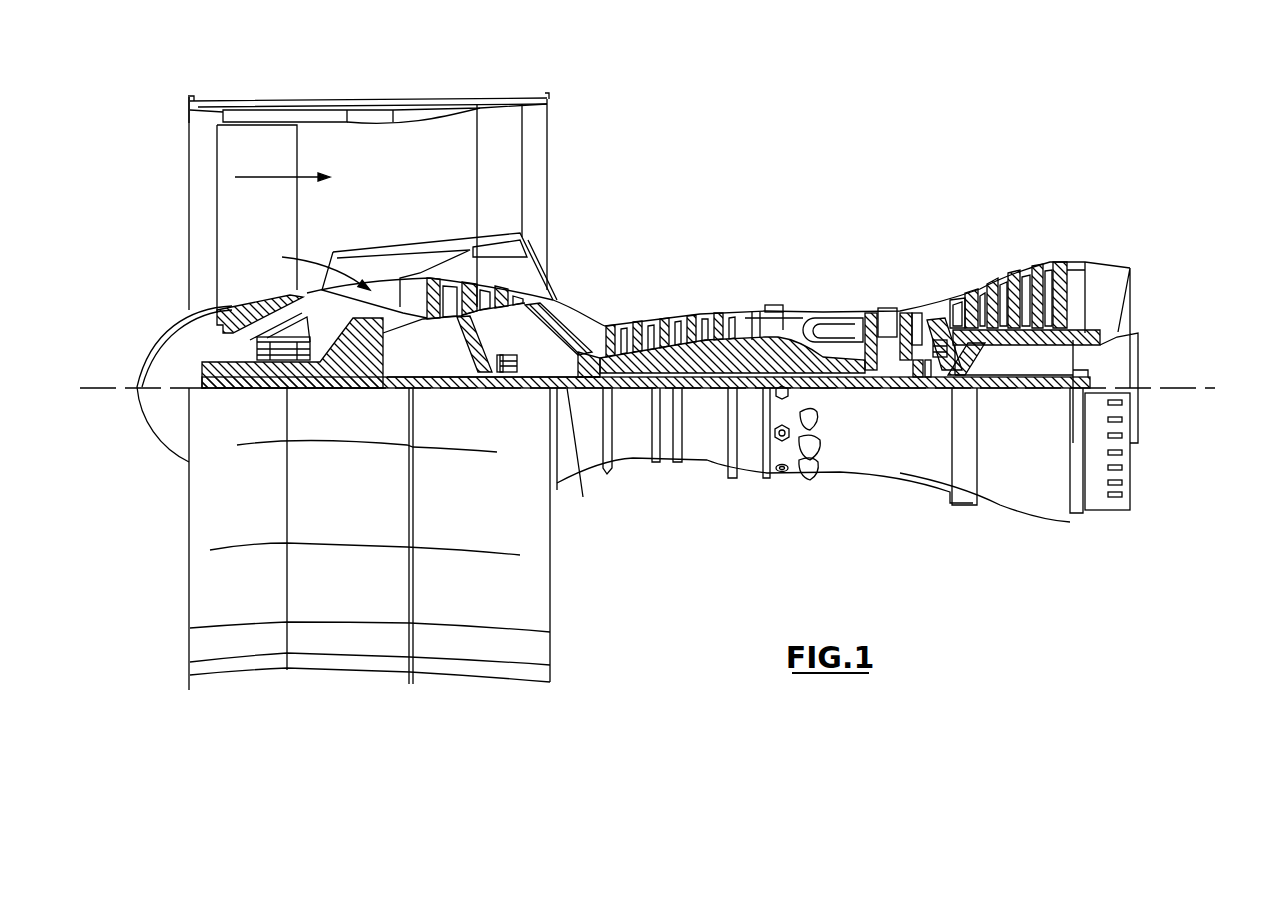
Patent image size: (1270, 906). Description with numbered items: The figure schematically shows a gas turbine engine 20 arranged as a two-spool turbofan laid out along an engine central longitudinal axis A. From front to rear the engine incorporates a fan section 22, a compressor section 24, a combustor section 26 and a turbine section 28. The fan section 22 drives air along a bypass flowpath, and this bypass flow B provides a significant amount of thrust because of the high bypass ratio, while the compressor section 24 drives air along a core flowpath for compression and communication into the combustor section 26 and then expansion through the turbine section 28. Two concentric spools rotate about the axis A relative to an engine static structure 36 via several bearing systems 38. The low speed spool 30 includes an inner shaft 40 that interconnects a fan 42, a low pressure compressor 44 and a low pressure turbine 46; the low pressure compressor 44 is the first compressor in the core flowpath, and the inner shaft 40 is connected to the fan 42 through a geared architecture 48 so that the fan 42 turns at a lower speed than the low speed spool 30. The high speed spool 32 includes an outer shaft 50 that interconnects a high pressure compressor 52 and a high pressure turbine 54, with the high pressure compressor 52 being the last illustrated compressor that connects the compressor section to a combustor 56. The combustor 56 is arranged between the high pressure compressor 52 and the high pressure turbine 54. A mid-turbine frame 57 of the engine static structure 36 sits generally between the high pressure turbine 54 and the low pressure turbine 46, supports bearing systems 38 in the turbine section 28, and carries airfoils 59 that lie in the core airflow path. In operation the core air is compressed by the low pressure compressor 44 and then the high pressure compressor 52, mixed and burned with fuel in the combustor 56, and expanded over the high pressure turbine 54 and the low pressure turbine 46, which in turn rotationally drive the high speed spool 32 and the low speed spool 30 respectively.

The gas turbine engine 20 is at (832, 149).
The fan section 22 is at (293, 90).
The compressor section 24 is at (605, 290).
The combustor section 26 is at (823, 280).
The turbine section 28 is at (970, 245).
The low speed spool 30 is at (707, 395).
The high speed spool 32 is at (752, 312).
The engine static structure 36 is at (748, 478).
The bearing systems 38 is at (507, 377).
The inner shaft 40 is at (583, 495).
The fan 42 is at (240, 234).
The low pressure compressor 44 is at (523, 237).
The low pressure turbine 46 is at (1017, 262).
The geared architecture 48 is at (372, 378).
The outer shaft 50 is at (834, 372).
The high pressure compressor 52 is at (681, 353).
The high pressure turbine 54 is at (888, 310).
The combustor 56 is at (823, 327).
The mid-turbine frame 57 is at (930, 300).
The airfoils 59 is at (950, 350).
The engine central longitudinal axis A is at (1226, 387).
The bypass flow B is at (267, 176).